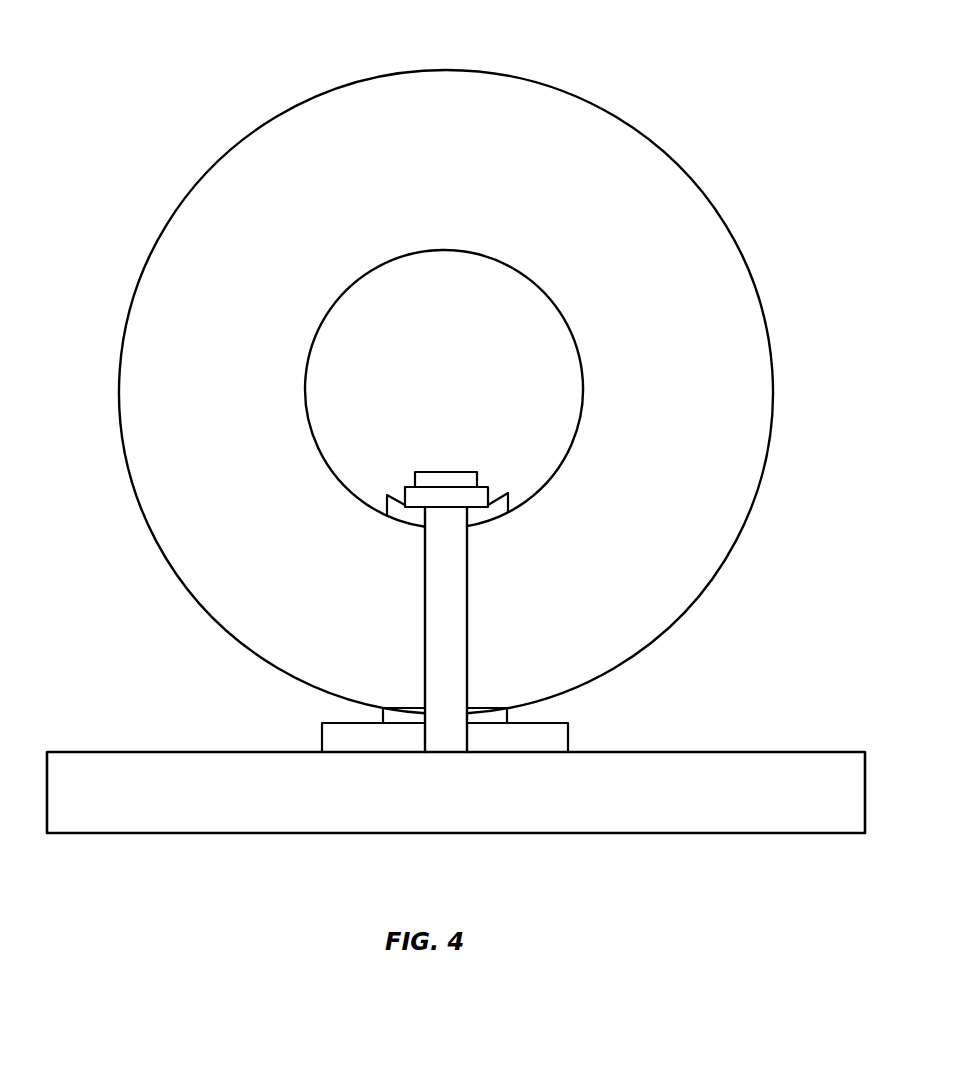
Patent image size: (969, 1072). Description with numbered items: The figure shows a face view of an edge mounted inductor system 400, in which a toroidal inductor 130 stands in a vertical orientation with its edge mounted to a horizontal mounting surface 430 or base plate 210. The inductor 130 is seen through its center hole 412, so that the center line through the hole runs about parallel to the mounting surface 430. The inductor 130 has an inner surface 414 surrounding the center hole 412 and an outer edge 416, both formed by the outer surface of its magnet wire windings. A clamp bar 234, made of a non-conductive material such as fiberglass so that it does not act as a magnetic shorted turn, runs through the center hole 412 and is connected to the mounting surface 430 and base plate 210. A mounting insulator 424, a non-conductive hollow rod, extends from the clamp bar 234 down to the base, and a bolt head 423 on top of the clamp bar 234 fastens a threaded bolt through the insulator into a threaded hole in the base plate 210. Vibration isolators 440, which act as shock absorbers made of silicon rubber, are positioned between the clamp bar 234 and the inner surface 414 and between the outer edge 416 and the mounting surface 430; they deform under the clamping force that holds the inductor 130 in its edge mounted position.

The edge mounted inductor system 400 is at (706, 67).
The outer edge 416 is at (656, 146).
The inner surface 414 is at (495, 260).
The center hole 412 is at (444, 377).
The inductor 130 is at (446, 391).
The bolt head 423 is at (445, 470).
The clamp bar 234 is at (482, 484).
The mounting insulator 424 is at (425, 637).
The vibration isolator 440 is at (395, 525).
The mounting surface 430 is at (332, 722).
The base plate 210 is at (840, 752).